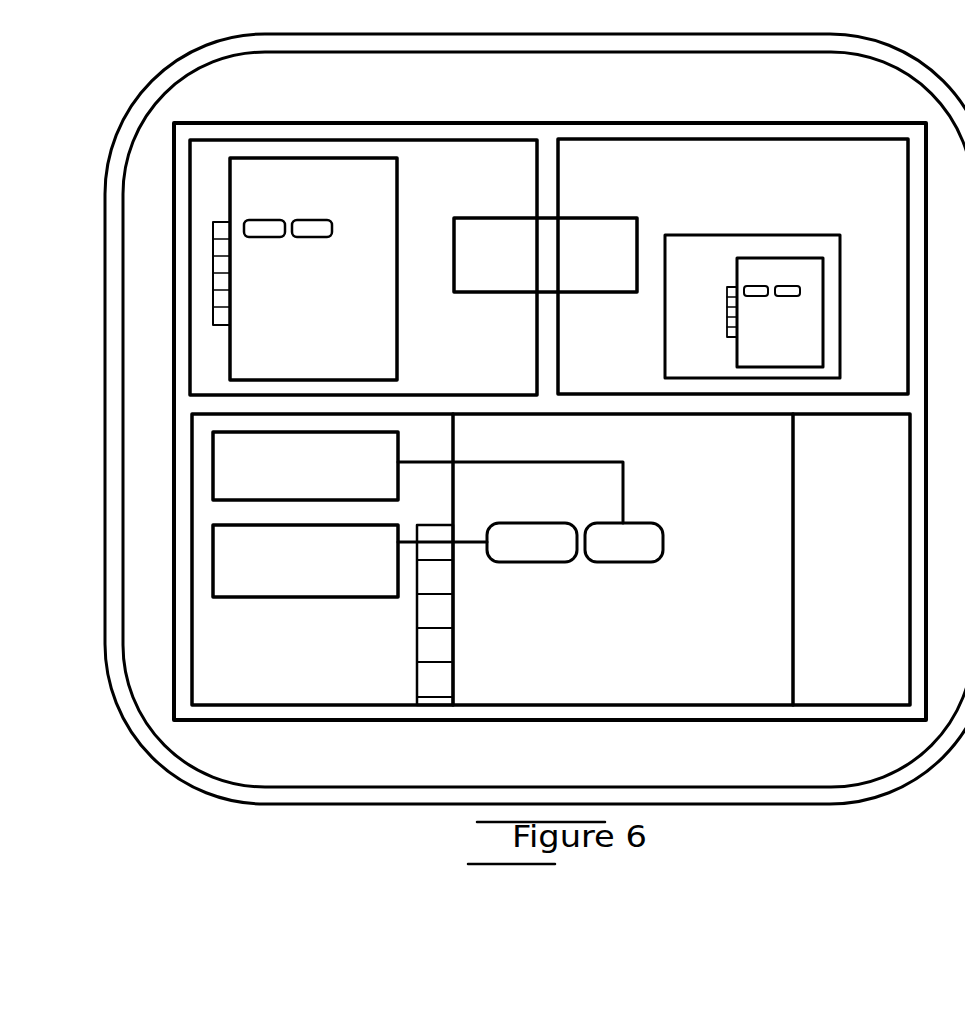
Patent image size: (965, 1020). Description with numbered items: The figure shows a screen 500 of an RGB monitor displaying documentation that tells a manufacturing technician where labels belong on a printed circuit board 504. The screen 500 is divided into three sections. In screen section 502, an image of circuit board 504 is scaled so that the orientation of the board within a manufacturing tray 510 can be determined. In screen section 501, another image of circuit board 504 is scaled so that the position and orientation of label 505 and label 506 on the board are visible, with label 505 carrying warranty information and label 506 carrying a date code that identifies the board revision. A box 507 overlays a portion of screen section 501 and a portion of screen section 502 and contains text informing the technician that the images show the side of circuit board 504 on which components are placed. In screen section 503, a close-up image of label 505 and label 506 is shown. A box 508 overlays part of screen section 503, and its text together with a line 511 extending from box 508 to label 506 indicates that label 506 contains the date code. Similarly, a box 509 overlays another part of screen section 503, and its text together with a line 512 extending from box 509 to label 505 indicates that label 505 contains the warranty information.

The screen 500 is at (847, 800).
The screen section 501 is at (453, 146).
The screen section 502 is at (708, 138).
The screen section 503 is at (508, 705).
The printed circuit board 504 is at (392, 190).
The label 505 is at (253, 237).
The label 506 is at (331, 237).
The box 507 is at (587, 290).
The box 508 is at (215, 470).
The box 509 is at (257, 596).
The manufacturing tray 510 is at (665, 357).
The line 511 is at (563, 462).
The line 512 is at (465, 541).